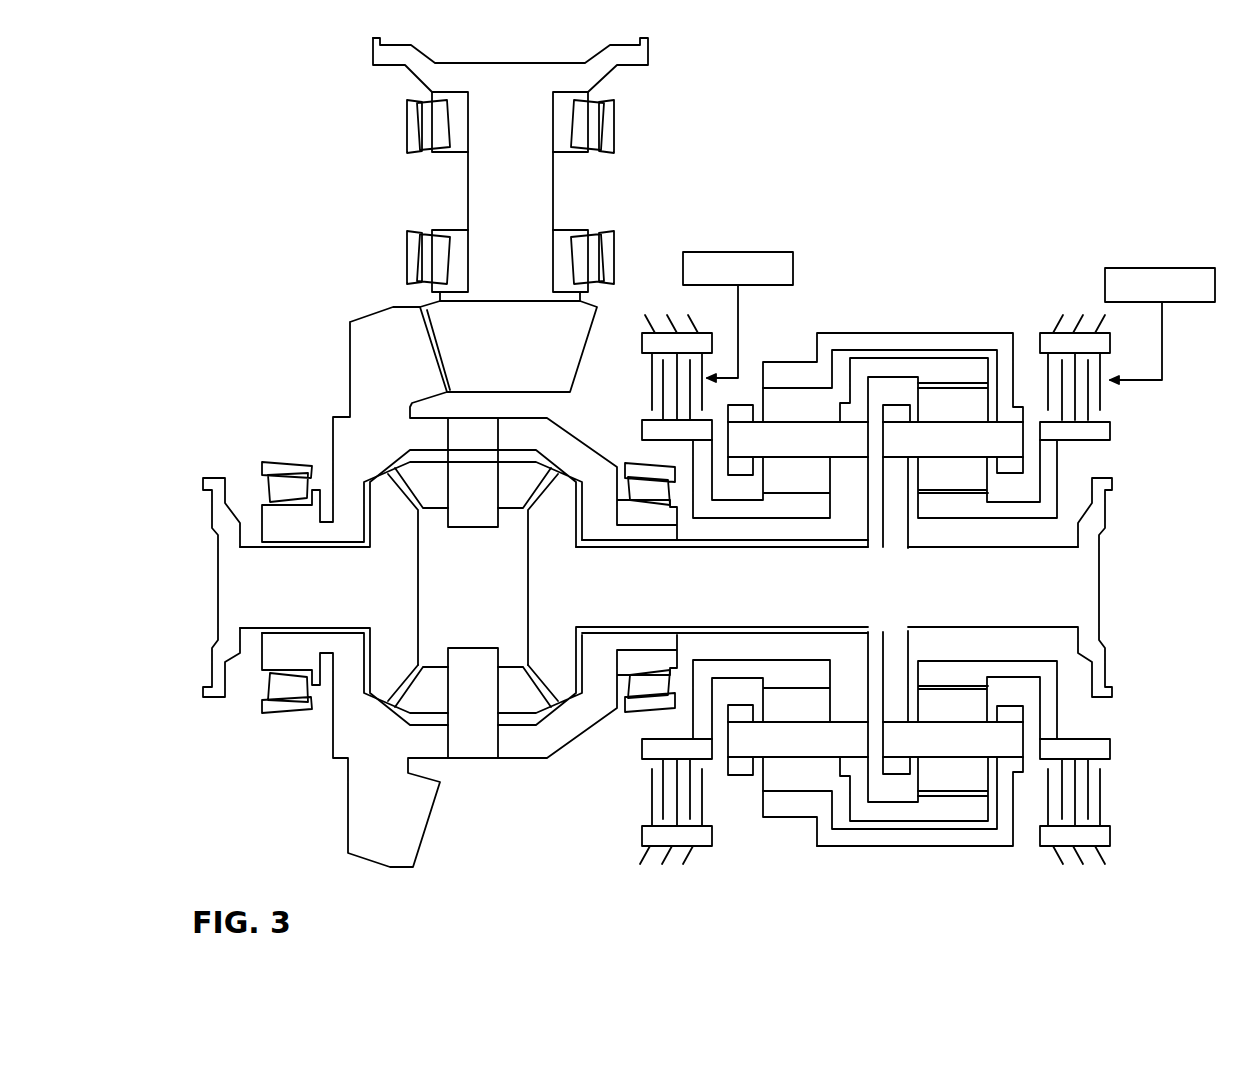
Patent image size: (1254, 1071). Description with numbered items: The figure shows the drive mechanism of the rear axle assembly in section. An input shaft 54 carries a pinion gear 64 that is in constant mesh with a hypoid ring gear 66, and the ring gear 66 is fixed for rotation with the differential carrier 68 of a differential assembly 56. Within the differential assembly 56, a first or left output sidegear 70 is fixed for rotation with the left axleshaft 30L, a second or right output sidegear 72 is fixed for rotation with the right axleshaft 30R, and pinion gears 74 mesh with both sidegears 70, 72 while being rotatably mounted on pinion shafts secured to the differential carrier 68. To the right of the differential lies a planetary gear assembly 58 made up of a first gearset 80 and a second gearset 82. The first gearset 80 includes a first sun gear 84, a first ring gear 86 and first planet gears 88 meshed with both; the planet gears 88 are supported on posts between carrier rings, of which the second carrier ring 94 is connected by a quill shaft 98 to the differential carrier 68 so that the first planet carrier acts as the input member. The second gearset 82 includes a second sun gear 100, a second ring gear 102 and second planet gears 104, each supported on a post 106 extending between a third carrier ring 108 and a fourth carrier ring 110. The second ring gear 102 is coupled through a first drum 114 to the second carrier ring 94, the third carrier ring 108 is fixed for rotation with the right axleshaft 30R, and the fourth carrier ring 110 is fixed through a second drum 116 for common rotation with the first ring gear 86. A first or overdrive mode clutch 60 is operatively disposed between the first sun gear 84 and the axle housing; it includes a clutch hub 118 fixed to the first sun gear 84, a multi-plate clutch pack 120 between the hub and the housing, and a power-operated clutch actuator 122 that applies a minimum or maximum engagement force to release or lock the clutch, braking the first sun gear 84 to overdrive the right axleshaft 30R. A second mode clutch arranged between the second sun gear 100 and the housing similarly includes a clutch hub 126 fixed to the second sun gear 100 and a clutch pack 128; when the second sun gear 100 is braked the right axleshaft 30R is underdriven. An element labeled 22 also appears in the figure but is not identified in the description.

The actuator 22 is at (1207, 275).
The left axleshaft 30L is at (235, 583).
The right axleshaft 30R is at (1085, 578).
The input shaft 54 is at (543, 192).
The differential assembly 56 is at (402, 633).
The planetary gear assembly 58 is at (963, 285).
The first mode clutch 60 is at (723, 827).
The pinion gear 64 is at (572, 345).
The hypoid ring gear 66 is at (412, 827).
The differential carrier 68 is at (560, 447).
The first output sidegear 70 is at (387, 503).
The second output sidegear 72 is at (548, 668).
The pinion gears 74 is at (523, 487).
The first gearset 80 is at (773, 473).
The second gearset 82 is at (1000, 482).
The first sun gear 84 is at (797, 670).
The first ring gear 86 is at (793, 808).
The first planet gears 88 is at (777, 697).
The second carrier ring 94 is at (853, 488).
The quill shaft 98 is at (688, 538).
The second sun gear 100 is at (948, 508).
The second ring gear 102 is at (975, 368).
The second planet gears 104 is at (965, 707).
The post 106 is at (967, 753).
The third carrier ring 108 is at (897, 413).
The fourth carrier ring 110 is at (1005, 808).
The first drum 114 is at (882, 813).
The second drum 116 is at (922, 838).
The clutch hub 118 is at (642, 752).
The multi-plate clutch pack 120 is at (655, 805).
The power-operated clutch actuator 122 is at (787, 258).
The clutch hub 126 is at (1085, 750).
The clutch pack 128 is at (1093, 793).